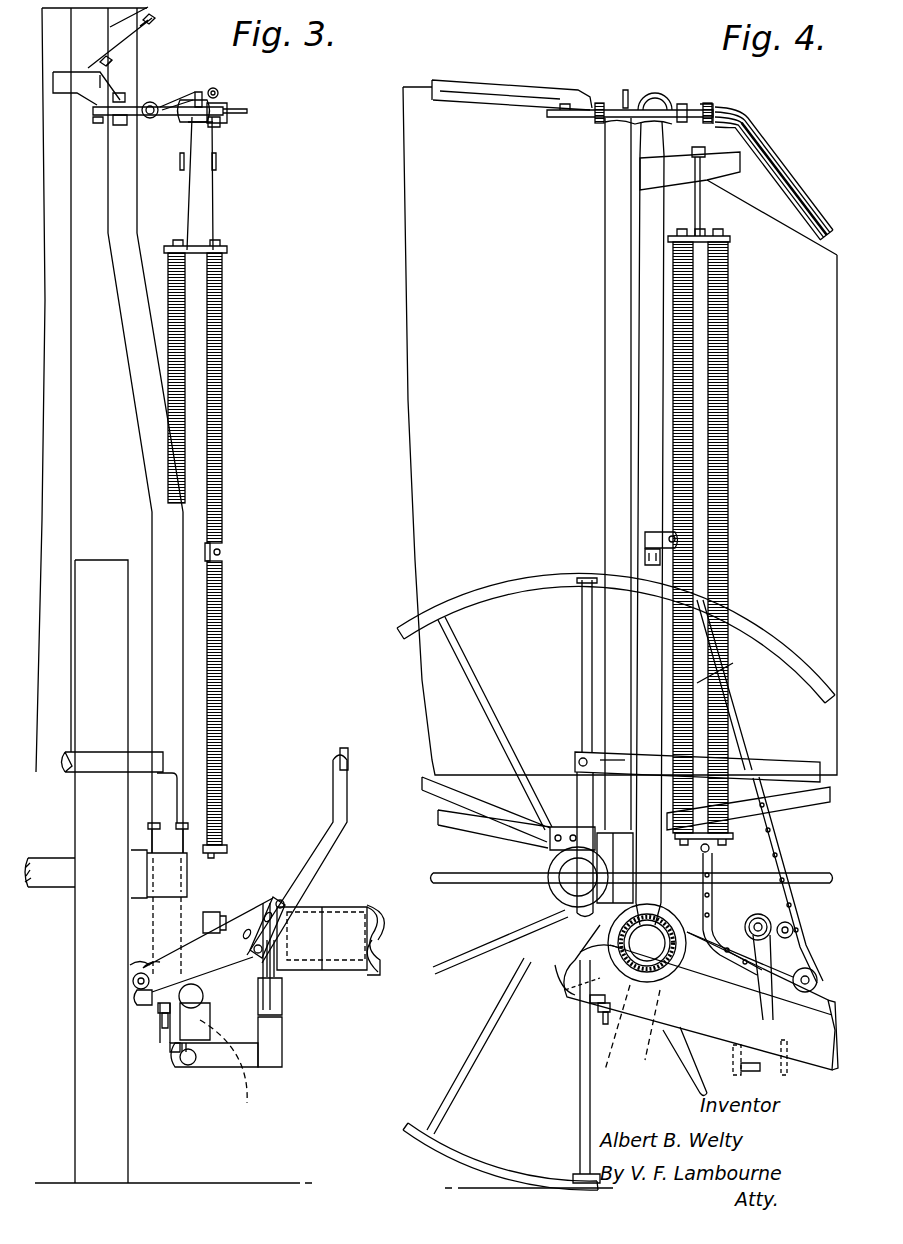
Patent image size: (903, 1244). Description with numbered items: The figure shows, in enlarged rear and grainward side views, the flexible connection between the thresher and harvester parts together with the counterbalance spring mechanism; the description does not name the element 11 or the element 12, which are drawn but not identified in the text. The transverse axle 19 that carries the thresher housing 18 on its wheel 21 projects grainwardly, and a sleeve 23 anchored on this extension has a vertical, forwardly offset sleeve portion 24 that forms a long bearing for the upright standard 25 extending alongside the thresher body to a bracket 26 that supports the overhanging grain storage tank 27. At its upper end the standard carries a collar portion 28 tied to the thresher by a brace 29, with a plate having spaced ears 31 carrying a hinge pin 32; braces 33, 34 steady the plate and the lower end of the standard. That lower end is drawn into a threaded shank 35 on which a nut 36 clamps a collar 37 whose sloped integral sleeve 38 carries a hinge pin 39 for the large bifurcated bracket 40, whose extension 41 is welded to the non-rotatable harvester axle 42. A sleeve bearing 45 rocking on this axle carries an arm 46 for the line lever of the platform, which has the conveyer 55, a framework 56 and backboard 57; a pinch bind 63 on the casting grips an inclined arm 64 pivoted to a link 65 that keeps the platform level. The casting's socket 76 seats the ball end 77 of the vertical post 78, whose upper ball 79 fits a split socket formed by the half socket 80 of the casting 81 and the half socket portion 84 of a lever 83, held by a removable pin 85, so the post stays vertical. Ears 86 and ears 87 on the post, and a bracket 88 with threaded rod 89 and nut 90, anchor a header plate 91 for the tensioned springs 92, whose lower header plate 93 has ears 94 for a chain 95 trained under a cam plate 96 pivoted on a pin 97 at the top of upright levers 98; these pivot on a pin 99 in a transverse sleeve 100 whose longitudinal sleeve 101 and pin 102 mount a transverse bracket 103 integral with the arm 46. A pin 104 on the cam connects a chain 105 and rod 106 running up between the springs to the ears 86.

In FIG. 3, the gear housing 11 is at (360, 908).
In FIG. 4, the gear housing 11 is at (567, 985).
In FIG. 3, the bearing sleeve 12 is at (268, 956).
In FIG. 4, the bearing sleeve 12 is at (672, 953).
In FIG. 3, the thresher or separator housing 18 is at (62, 312).
In FIG. 3, the transverse axle 19 is at (44, 862).
In FIG. 4, the transverse axle 19 is at (570, 885).
In FIG. 3, the wheel 21 is at (94, 572).
In FIG. 4, the wheel 21 is at (523, 578).
In FIG. 3, the sleeve 23 is at (190, 880).
In FIG. 4, the sleeve 23 is at (570, 884).
In FIG. 3, the vertical sleeve portion 24 is at (188, 828).
In FIG. 4, the vertical sleeve portion 24 is at (572, 942).
In FIG. 3, the upright standard 25 is at (165, 680).
In FIG. 4, the upright standard 25 is at (610, 316).
In FIG. 3, the bracket 26 is at (135, 27).
In FIG. 3, the grain storage tank 27 is at (112, 32).
In FIG. 3, the collar portion 28 is at (118, 122).
In FIG. 3, the brace 29 is at (68, 72).
In FIG. 4, the brace 29 is at (507, 94).
In FIG. 3, the ears 31 is at (172, 126).
In FIG. 4, the ears 31 is at (600, 103).
In FIG. 3, the hinge pin 32 is at (150, 118).
In FIG. 3, the brace 33 is at (115, 765).
In FIG. 4, the brace 33 is at (465, 826).
In FIG. 4, the brace 34 is at (795, 800).
In FIG. 3, the threaded shank 35 is at (162, 1020).
In FIG. 3, the nut 36 is at (158, 1013).
In FIG. 3, the collar 37 is at (150, 998).
In FIG. 3, the integral sleeve 38 is at (133, 982).
In FIG. 3, the hinge pin 39 is at (135, 967).
In FIG. 4, the hinge pin 39 is at (560, 1000).
In FIG. 3, the bifurcated bracket 40 is at (250, 918).
In FIG. 4, the bifurcated bracket 40 is at (572, 1012).
In FIG. 3, the extension 41 is at (282, 980).
In FIG. 3, the harvester axle 42 is at (380, 968).
In FIG. 3, the sleeve bearing 45 is at (312, 908).
In FIG. 4, the sleeve bearing 45 is at (668, 918).
In FIG. 3, the arm or bracket 46 is at (282, 1054).
In FIG. 4, the arm or bracket 46 is at (698, 1092).
In FIG. 4, the conveyer 55 is at (606, 1025).
In FIG. 4, the framework 56 is at (600, 1015).
In FIG. 4, the backboard 57 is at (590, 1000).
In FIG. 3, the pinch bind 63 is at (274, 905).
In FIG. 3, the inclined arm 64 is at (345, 797).
In FIG. 4, the inclined arm 64 is at (582, 788).
In FIG. 3, the link 65 is at (346, 752).
In FIG. 4, the link 65 is at (612, 760).
In FIG. 3, the socket 76 is at (192, 1060).
In FIG. 4, the socket 76 is at (644, 1038).
In FIG. 3, the ball-shaped lower end 77 is at (230, 1069).
In FIG. 4, the ball-shaped lower end 77 is at (615, 1027).
In FIG. 3, the vertical post 78 is at (200, 200).
In FIG. 4, the vertical post 78 is at (660, 860).
In FIG. 3, the ball-shaped upper end 79 is at (212, 126).
In FIG. 4, the ball-shaped upper end 79 is at (675, 100).
In FIG. 3, the half ball socket 80 is at (175, 115).
In FIG. 3, the casting 81 is at (190, 95).
In FIG. 3, the lever 83 is at (247, 110).
In FIG. 4, the lever 83 is at (575, 115).
In FIG. 3, the half ball socket portion 84 is at (203, 92).
In FIG. 4, the half ball socket portion 84 is at (652, 95).
In FIG. 3, the removable pin 85 is at (218, 92).
In FIG. 4, the removable pin 85 is at (626, 90).
In FIG. 4, the ears 86 is at (668, 532).
In FIG. 3, the ears 87 is at (221, 552).
In FIG. 4, the ears 87 is at (645, 553).
In FIG. 3, the bracket 88 is at (216, 160).
In FIG. 4, the bracket 88 is at (720, 165).
In FIG. 4, the threaded rod 89 is at (701, 218).
In FIG. 4, the nut 90 is at (705, 152).
In FIG. 3, the header plate 91 is at (224, 246).
In FIG. 4, the header plate 91 is at (733, 240).
In FIG. 3, the tensioned springs 92 is at (215, 276).
In FIG. 4, the tensioned springs 92 is at (722, 316).
In FIG. 3, the lower header plate 93 is at (227, 849).
In FIG. 4, the lower header plate 93 is at (736, 838).
In FIG. 4, the ears 94 is at (712, 850).
In FIG. 4, the chain 95 is at (712, 918).
In FIG. 4, the cam plate 96 is at (795, 945).
In FIG. 3, the pin 97 is at (222, 920).
In FIG. 4, the pin 97 is at (770, 920).
In FIG. 3, the upright levers 98 is at (210, 1020).
In FIG. 4, the upright levers 98 is at (790, 966).
In FIG. 3, the pin 99 is at (163, 1045).
In FIG. 3, the transverse sleeve 100 is at (176, 1055).
In FIG. 4, the transverse sleeve 100 is at (808, 986).
In FIG. 4, the longitudinal sleeve 101 is at (805, 1046).
In FIG. 3, the longitudinal pin 102 is at (190, 1052).
In FIG. 4, the longitudinal pin 102 is at (733, 1058).
In FIG. 3, the transverse bracket 103 is at (247, 1062).
In FIG. 4, the transverse bracket 103 is at (748, 1072).
In FIG. 4, the pin 104 is at (793, 927).
In FIG. 4, the chain 105 is at (785, 855).
In FIG. 4, the rod 106 is at (745, 738).